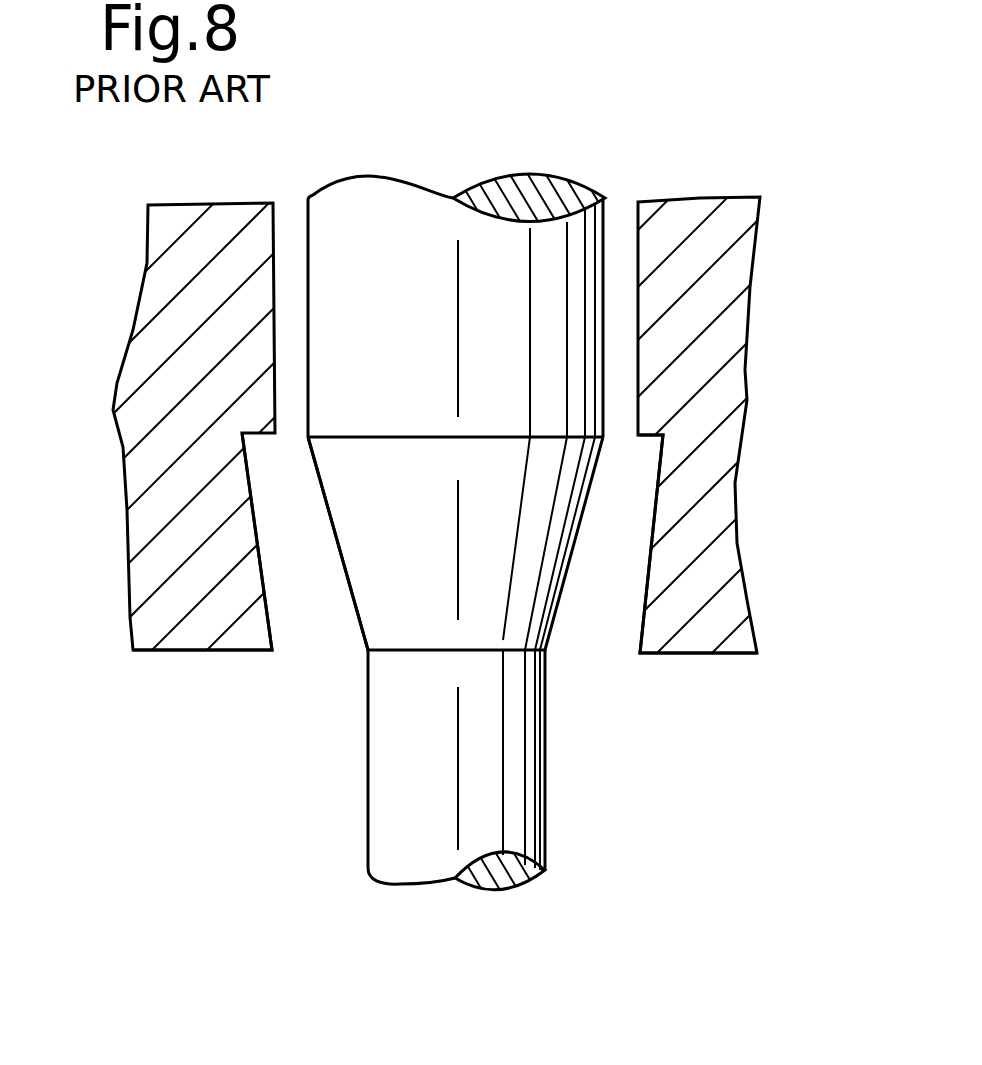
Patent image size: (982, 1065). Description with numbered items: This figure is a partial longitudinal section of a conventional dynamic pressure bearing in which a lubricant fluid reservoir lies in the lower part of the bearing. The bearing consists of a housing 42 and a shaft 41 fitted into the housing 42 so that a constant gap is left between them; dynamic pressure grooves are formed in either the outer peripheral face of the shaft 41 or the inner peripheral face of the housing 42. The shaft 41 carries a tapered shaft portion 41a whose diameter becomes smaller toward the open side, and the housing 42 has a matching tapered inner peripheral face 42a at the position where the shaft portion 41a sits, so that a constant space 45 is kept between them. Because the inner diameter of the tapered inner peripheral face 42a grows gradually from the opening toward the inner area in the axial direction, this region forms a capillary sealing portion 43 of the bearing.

The shaft 41 is at (565, 300).
The tapered shaft portion 41a is at (543, 500).
The housing 42 is at (703, 333).
The tapered inner peripheral face 42a is at (650, 580).
The capillary sealing portion 43 is at (107, 432).
The constant space 45 is at (300, 553).